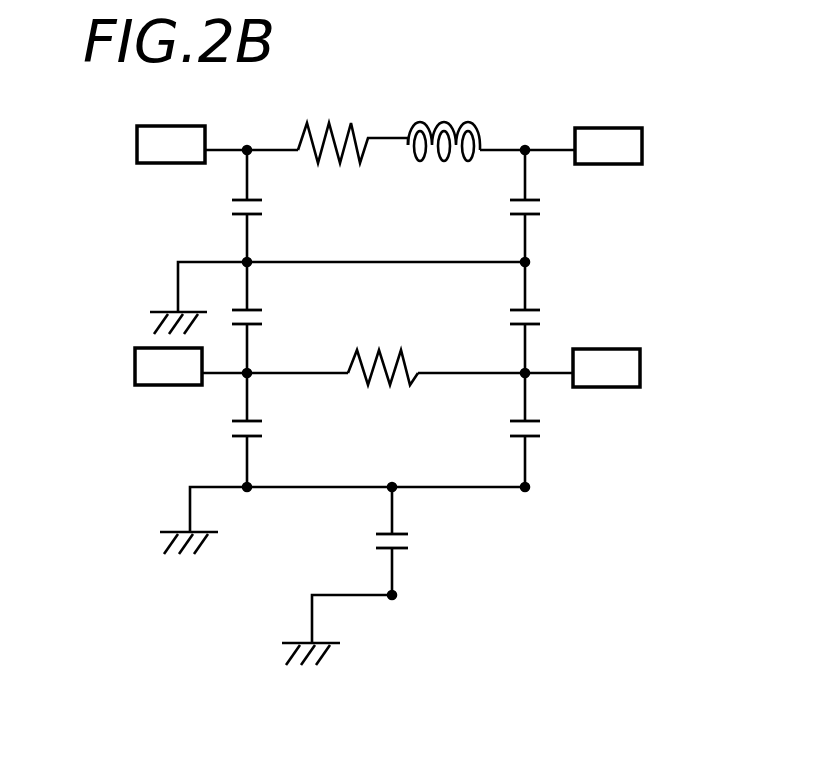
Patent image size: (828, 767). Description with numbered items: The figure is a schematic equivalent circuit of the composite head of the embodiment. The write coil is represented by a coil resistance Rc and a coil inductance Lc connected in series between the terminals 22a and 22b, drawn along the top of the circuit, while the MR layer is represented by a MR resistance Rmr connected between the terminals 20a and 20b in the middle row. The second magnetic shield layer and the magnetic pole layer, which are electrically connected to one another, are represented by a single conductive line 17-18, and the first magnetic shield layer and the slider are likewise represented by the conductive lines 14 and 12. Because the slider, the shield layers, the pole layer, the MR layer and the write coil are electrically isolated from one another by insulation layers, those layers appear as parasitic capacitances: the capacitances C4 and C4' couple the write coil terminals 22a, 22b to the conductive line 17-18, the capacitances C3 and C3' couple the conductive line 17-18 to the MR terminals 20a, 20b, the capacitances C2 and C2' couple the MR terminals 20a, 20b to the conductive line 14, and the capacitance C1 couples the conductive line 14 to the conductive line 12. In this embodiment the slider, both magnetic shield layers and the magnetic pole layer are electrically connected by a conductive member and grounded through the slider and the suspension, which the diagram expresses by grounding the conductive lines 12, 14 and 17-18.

The terminal 22a is at (135, 149).
The terminal 22b is at (642, 148).
The terminal 20a is at (135, 371).
The terminal 20b is at (640, 366).
The coil resistance Rc is at (353, 126).
The coil inductance Lc is at (444, 123).
The MR resistance Rmr is at (385, 350).
The parasitic capacitance C4 is at (287, 208).
The parasitic capacitance C4' is at (567, 208).
The parasitic capacitance C3 is at (287, 320).
The parasitic capacitance C3' is at (567, 320).
The parasitic capacitance C2 is at (287, 432).
The parasitic capacitance C2' is at (567, 432).
The parasitic capacitance C1 is at (410, 540).
The conductive line 17-18 is at (525, 262).
The conductive line 14 is at (525, 487).
The conductive line 12 is at (392, 595).